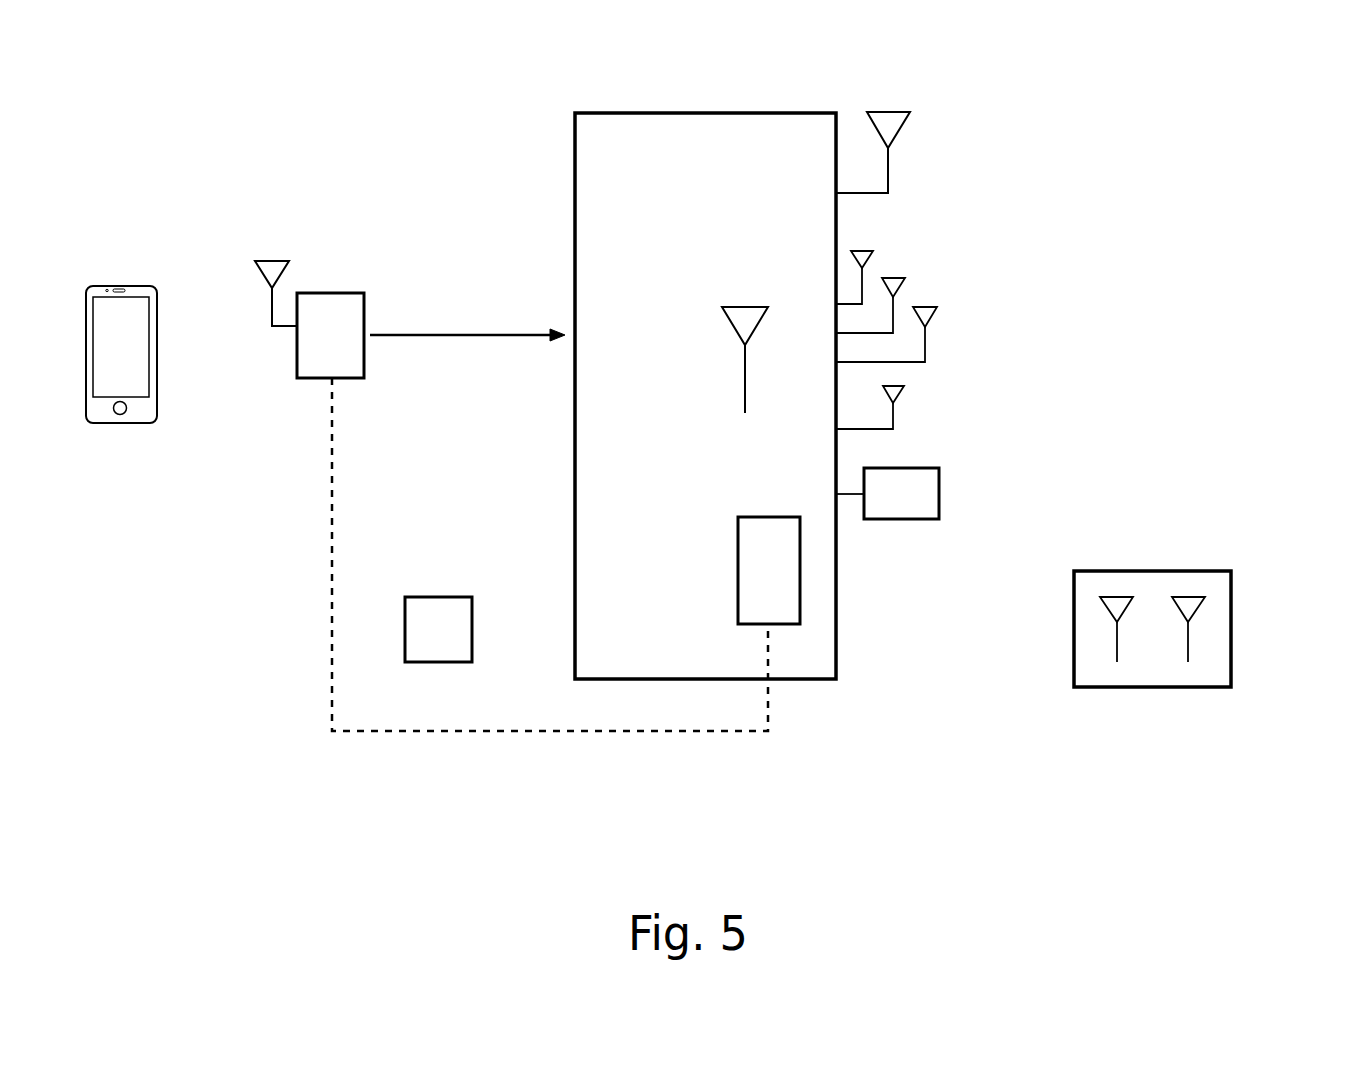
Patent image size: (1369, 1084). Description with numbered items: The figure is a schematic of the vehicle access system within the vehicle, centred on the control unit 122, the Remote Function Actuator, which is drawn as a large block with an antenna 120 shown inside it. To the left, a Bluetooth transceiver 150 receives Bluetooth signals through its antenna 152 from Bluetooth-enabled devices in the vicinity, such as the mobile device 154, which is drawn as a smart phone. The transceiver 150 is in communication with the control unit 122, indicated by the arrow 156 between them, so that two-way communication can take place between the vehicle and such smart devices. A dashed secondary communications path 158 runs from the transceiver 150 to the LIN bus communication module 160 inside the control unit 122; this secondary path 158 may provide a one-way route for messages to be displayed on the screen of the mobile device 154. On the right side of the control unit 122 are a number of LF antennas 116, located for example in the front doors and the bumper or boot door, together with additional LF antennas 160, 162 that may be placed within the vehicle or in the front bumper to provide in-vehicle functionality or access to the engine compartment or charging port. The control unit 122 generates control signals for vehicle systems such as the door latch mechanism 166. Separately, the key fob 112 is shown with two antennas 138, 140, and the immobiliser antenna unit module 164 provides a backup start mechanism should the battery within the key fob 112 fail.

The key fob 112 is at (1152, 570).
The LF antennas 116 is at (940, 243).
The antenna 120 is at (743, 307).
The control unit 122 is at (627, 112).
The antenna 138 is at (1197, 607).
The antenna 140 is at (1110, 610).
The Bluetooth transceiver 150 is at (332, 293).
The antenna 152 is at (268, 260).
The mobile device 154 is at (143, 413).
The communication link 156 is at (467, 325).
The secondary communications path 158 is at (438, 734).
The LIN bus communication module 160 is at (895, 110).
The additional LF antenna 162 is at (904, 390).
The immobiliser antenna unit module 164 is at (438, 629).
The door latch mechanism 166 is at (939, 492).